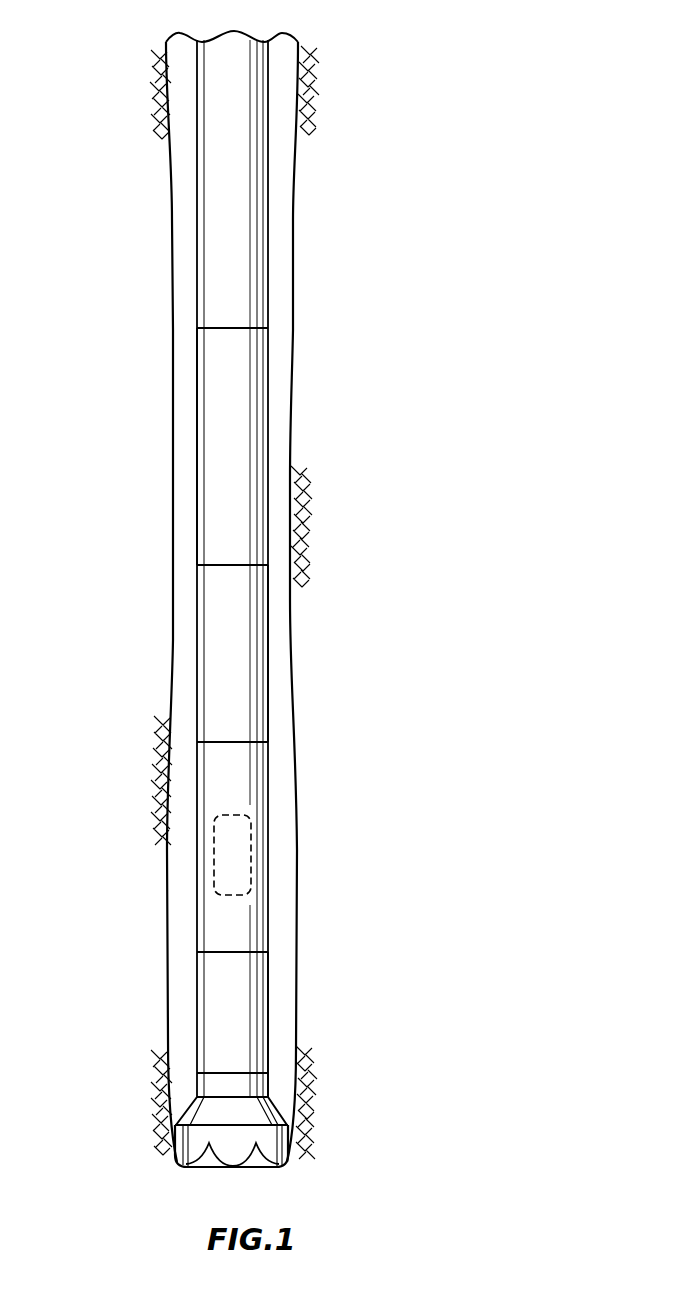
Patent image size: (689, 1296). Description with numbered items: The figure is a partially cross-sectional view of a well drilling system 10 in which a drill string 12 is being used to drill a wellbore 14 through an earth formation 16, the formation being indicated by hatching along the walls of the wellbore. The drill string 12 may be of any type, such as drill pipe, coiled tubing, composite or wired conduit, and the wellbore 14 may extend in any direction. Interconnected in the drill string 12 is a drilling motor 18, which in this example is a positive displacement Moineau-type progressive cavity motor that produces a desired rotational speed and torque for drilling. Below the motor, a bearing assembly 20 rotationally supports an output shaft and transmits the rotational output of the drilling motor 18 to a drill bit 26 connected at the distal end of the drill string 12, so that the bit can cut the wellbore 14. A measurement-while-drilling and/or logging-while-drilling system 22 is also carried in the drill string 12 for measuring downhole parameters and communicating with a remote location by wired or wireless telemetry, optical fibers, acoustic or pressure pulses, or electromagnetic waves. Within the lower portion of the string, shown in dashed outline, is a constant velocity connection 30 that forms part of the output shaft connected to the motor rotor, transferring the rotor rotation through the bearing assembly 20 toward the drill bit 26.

The system 10 is at (503, 98).
The drill string 12 is at (197, 218).
The wellbore 14 is at (293, 216).
The earth formation 16 is at (66, 880).
The drilling motor 18 is at (268, 637).
The bearing assembly 20 is at (268, 1018).
The measurement-while-drilling and/or logging-while-drilling system 22 is at (197, 430).
The drill bit 26 is at (276, 1107).
The constant velocity connection 30 is at (251, 845).